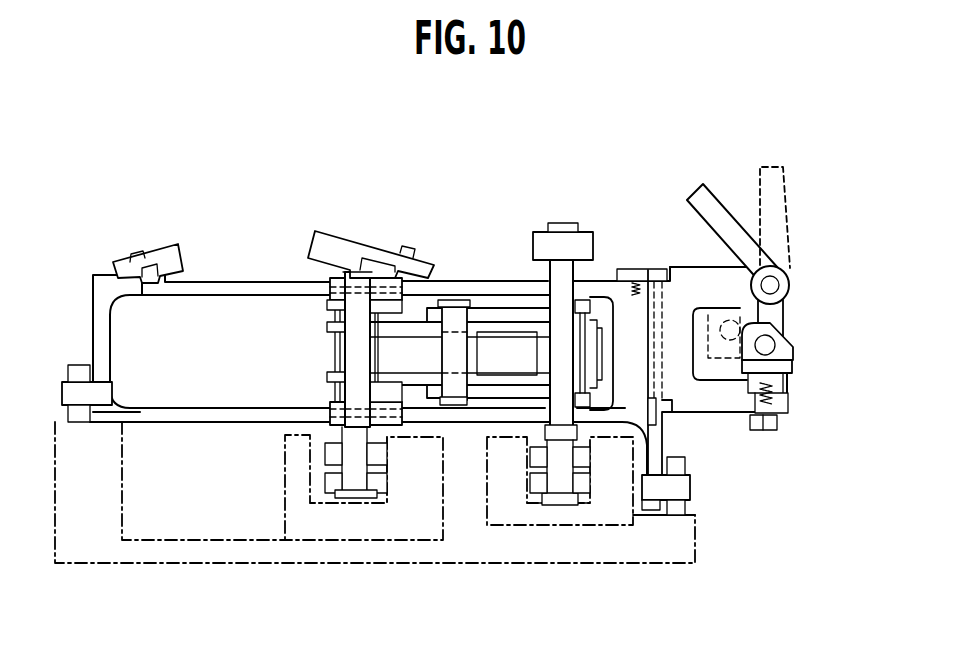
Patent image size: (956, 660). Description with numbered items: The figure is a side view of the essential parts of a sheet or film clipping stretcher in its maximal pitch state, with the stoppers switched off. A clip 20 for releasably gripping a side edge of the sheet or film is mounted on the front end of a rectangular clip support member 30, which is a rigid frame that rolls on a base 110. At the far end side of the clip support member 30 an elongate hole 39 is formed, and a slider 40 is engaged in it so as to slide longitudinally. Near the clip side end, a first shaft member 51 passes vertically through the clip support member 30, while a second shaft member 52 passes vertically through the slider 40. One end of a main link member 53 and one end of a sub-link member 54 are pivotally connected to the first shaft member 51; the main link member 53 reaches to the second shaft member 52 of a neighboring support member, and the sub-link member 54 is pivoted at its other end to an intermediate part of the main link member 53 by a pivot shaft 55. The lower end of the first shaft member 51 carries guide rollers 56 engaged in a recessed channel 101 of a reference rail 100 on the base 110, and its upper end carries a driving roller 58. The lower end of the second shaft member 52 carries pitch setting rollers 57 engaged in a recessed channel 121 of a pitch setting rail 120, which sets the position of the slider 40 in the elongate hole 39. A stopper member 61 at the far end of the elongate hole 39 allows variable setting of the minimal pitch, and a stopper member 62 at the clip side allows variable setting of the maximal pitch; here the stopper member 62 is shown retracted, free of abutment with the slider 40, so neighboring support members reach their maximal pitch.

The clip 20 is at (803, 325).
The clip support member 30 is at (513, 274).
The elongate hole 39 is at (228, 283).
The slider 40 is at (333, 279).
The first shaft member 51 is at (582, 270).
The second shaft member 52 is at (353, 313).
The main link member 53 is at (403, 327).
The sub-link member 54 is at (497, 310).
The pivot shaft 55 is at (457, 317).
The guide roller 56 is at (530, 453).
The pitch setting roller 57 is at (323, 450).
The driving roller 58 is at (582, 262).
The stopper member 61 is at (161, 252).
The stopper member 62 is at (358, 243).
The reference rail 100 is at (613, 520).
The recessed channel 101 is at (540, 500).
The base 110 is at (453, 568).
The pitch setting rail 120 is at (323, 523).
The recessed channel 121 is at (383, 497).